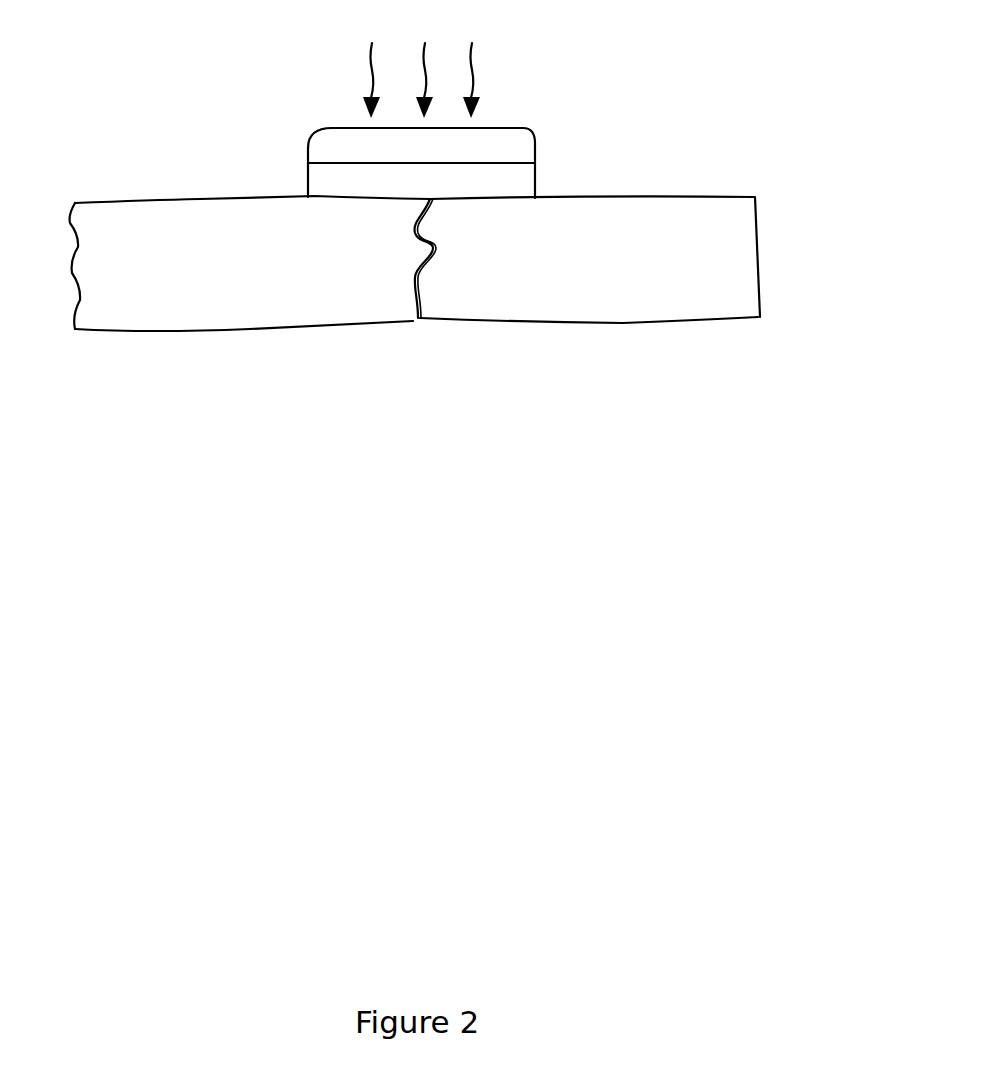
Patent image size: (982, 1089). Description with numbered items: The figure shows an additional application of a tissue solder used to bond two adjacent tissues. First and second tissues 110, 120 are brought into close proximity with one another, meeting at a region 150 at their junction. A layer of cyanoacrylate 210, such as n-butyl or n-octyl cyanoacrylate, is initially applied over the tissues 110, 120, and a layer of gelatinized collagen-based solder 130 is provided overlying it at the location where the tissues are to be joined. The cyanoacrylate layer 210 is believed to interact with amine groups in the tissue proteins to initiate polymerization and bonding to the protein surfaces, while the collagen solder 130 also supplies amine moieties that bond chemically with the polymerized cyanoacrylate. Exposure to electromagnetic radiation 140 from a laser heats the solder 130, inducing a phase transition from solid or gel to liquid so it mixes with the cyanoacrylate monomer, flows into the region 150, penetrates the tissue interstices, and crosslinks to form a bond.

The first tissue 110 is at (623, 307).
The second tissue 120 is at (147, 303).
The layer of gelatinized solder 130 is at (507, 148).
The electromagnetic radiation 140 is at (488, 61).
The region at the junction of the two tissues 150 is at (427, 278).
The layer of cyanoacrylate 210 is at (330, 178).